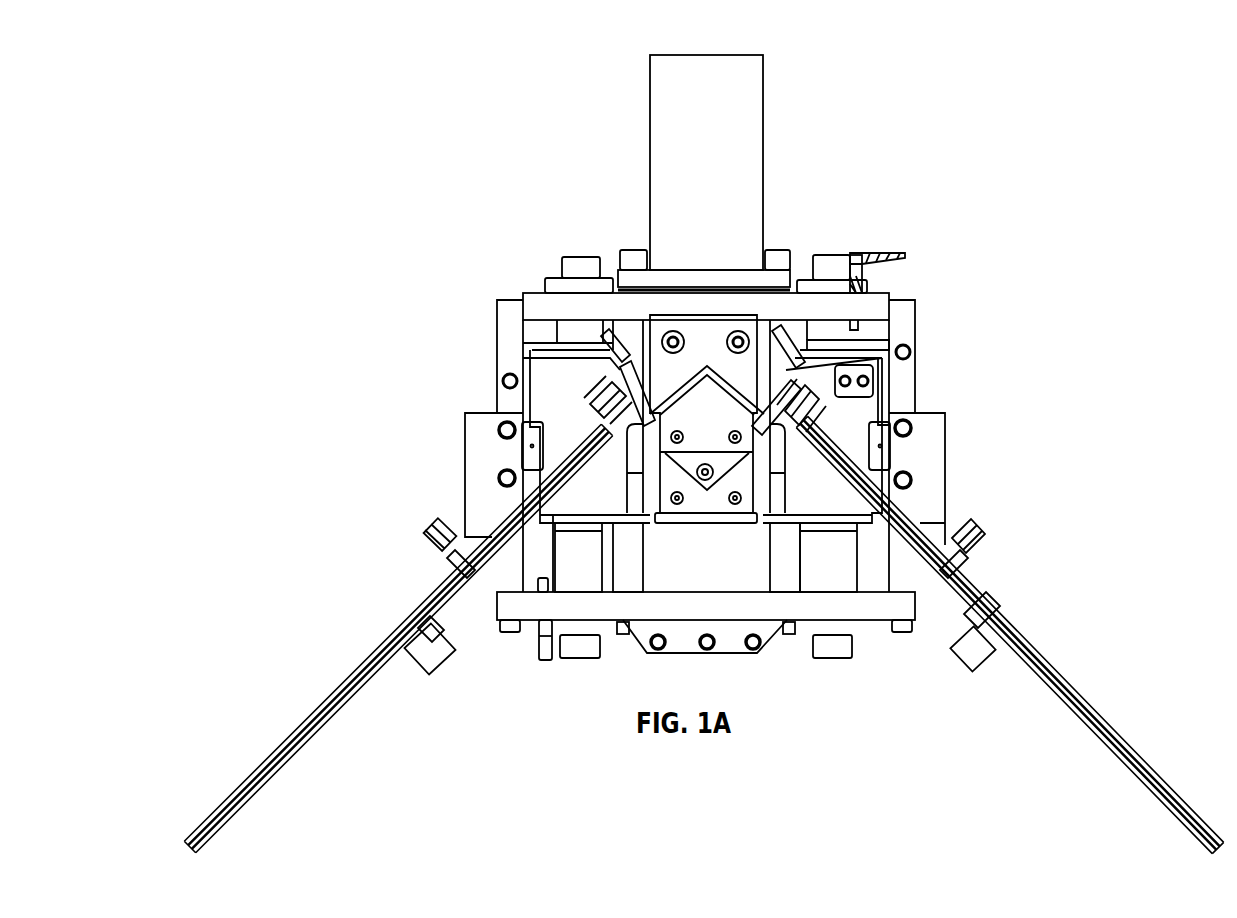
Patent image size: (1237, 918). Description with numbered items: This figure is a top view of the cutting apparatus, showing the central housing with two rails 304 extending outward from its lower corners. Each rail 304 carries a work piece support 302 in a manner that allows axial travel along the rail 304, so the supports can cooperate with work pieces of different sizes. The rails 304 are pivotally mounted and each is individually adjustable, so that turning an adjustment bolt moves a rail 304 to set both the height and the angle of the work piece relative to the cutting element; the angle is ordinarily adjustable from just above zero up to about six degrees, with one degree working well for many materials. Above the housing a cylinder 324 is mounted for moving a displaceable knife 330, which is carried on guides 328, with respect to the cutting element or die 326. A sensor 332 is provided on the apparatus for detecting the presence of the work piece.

The work piece support 302 is at (430, 671).
The rail 304 is at (341, 681).
The cylinder 324 is at (764, 92).
The cutting element or die 326 is at (770, 362).
The guides 328 is at (582, 660).
The displaceable knife 330 is at (683, 390).
The sensor 332 is at (622, 332).